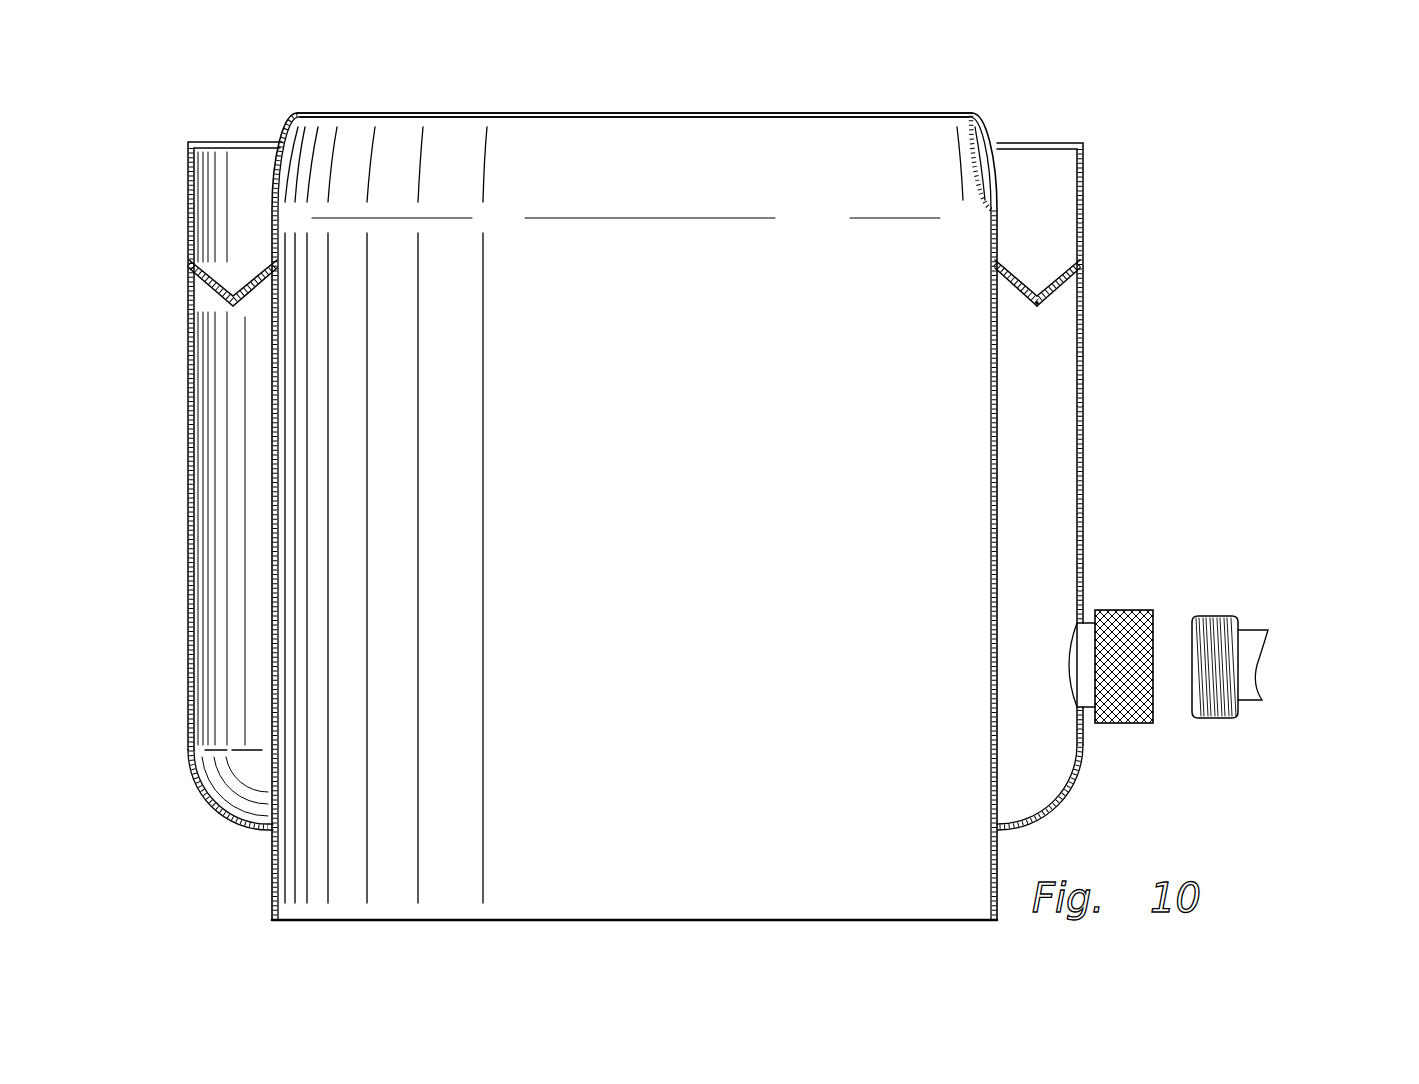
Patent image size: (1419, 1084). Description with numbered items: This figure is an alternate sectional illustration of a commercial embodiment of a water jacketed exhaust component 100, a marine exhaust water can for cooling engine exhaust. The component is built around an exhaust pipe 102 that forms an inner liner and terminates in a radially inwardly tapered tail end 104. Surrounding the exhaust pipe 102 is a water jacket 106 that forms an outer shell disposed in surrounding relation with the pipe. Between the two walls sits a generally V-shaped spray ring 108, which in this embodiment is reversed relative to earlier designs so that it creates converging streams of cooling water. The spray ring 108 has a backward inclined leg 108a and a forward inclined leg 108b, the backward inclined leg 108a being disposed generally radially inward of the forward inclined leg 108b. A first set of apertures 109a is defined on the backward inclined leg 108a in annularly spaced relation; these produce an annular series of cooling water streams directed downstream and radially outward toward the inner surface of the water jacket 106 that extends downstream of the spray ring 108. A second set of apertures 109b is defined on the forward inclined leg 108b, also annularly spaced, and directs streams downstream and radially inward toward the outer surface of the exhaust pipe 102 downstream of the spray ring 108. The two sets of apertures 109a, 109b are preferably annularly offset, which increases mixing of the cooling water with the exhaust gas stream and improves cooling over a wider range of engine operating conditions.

The water jacketed exhaust component 100 is at (1243, 155).
The exhaust pipe 102 is at (990, 633).
The radially inwardly tapered tail end 104 is at (920, 113).
The water jacket 106 is at (1083, 228).
The spray ring 108 is at (207, 280).
The backward inclined leg 108a is at (998, 272).
The forward inclined leg 108b is at (1072, 272).
The first set of apertures 109a is at (1022, 290).
The second set of apertures 109b is at (1062, 288).